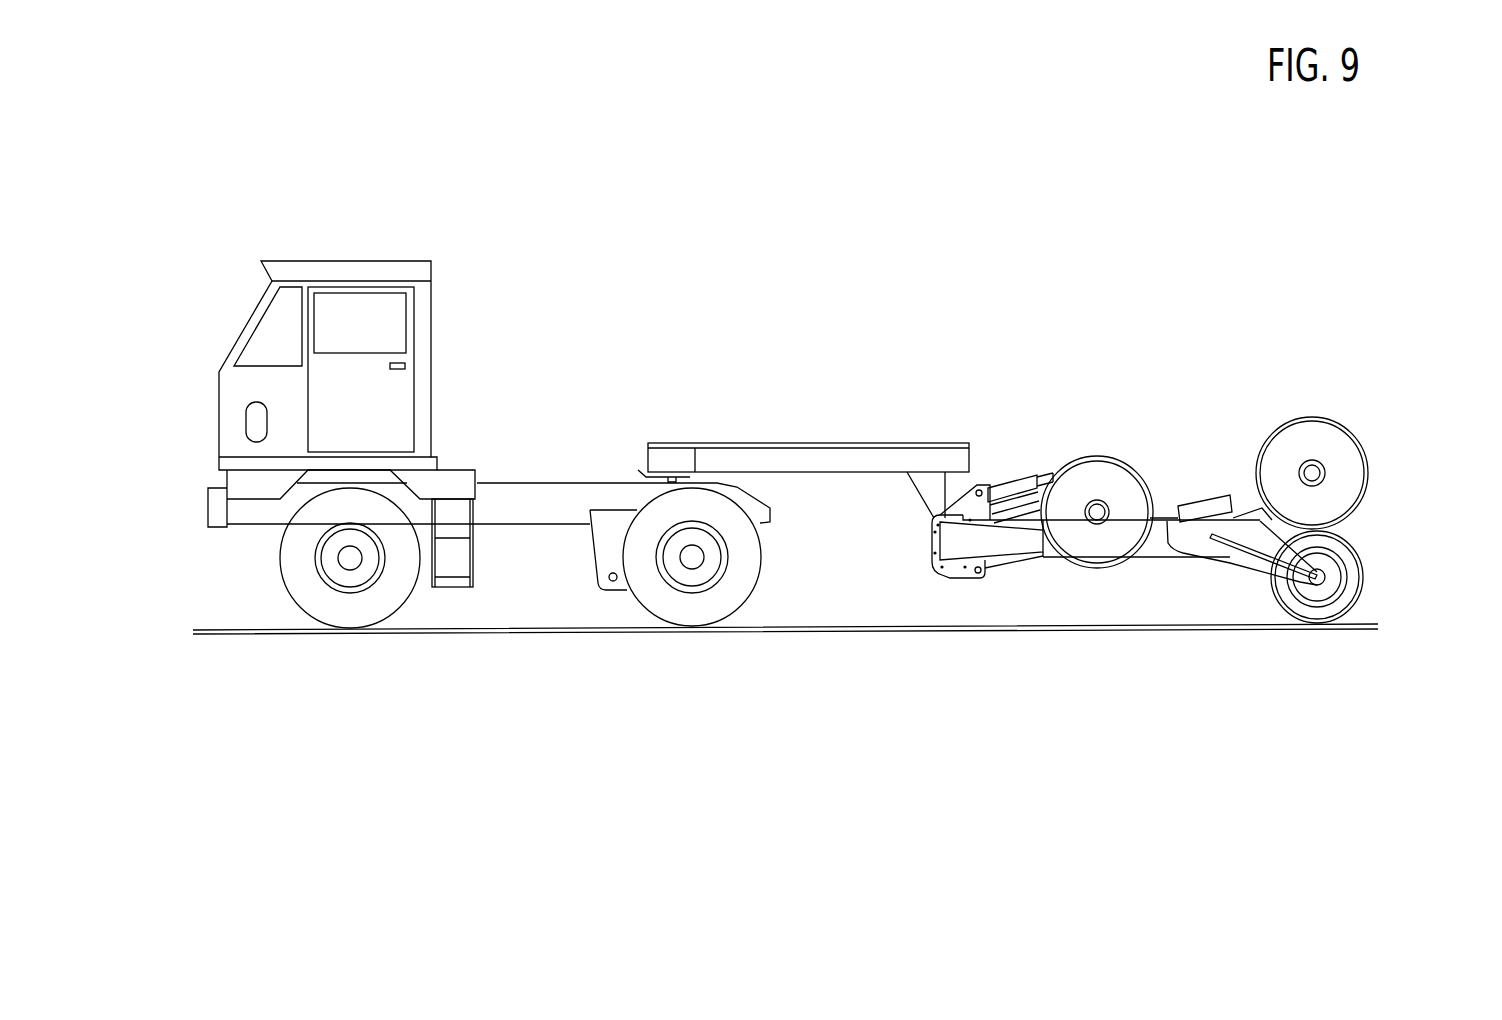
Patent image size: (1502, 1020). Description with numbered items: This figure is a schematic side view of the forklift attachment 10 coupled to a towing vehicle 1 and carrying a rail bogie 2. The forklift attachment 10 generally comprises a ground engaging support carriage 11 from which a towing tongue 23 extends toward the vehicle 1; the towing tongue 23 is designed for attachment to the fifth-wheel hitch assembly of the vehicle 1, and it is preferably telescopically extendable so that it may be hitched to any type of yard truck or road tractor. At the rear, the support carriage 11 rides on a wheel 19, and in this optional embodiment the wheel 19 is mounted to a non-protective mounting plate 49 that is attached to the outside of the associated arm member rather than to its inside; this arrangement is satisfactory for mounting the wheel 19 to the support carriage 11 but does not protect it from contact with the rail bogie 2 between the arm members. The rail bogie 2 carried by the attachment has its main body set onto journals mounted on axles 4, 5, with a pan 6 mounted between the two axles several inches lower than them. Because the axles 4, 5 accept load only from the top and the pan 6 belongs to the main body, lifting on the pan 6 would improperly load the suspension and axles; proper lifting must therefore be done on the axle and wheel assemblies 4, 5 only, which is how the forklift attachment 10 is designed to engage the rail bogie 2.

The vehicle 1 is at (294, 328).
The forklift attachment 10 is at (520, 428).
The towing tongue 23 is at (791, 387).
The support carriage 11 is at (1007, 411).
The axle 4 is at (1121, 438).
The pan 6 is at (1226, 428).
The rail bogie 2 is at (1328, 400).
The axle 5 is at (1371, 418).
The wheel 19 is at (1378, 577).
The non-protective mounting plate 49 is at (1206, 635).